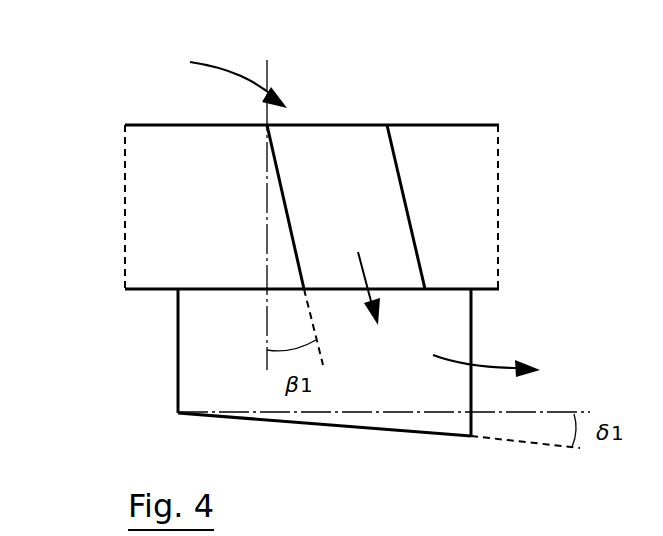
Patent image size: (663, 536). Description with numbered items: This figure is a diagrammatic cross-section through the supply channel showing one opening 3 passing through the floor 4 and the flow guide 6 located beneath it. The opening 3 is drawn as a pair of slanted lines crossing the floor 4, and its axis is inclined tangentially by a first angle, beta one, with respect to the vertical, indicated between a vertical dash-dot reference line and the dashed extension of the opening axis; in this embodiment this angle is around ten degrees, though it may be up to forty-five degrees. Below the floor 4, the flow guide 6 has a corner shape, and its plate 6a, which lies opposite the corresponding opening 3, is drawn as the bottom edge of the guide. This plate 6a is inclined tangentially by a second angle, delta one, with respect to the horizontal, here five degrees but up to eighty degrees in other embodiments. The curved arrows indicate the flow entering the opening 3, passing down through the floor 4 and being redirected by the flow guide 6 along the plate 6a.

The opening 3 is at (337, 137).
The floor 4 is at (443, 150).
The flow guide 6 is at (158, 375).
The plate 6a is at (362, 427).